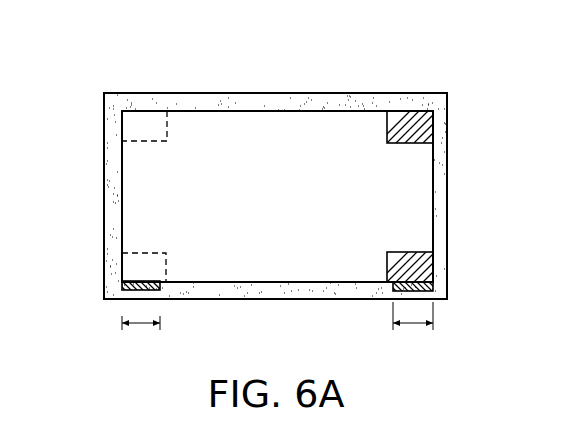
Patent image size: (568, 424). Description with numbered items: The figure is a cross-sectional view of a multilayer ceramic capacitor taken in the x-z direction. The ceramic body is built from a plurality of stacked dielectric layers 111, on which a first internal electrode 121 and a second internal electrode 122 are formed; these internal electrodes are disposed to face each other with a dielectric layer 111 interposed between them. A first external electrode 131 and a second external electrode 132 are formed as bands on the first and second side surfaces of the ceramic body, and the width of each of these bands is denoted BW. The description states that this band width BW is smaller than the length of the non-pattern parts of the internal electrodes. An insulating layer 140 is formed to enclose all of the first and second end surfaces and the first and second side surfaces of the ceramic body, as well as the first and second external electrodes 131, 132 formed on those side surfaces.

The dielectric layer 111 is at (412, 128).
The first internal electrode 121 is at (273, 158).
The second internal electrode 122 is at (146, 128).
The first external electrode 131 is at (142, 281).
The second external electrode 132 is at (408, 283).
The insulating layer 140 is at (341, 102).